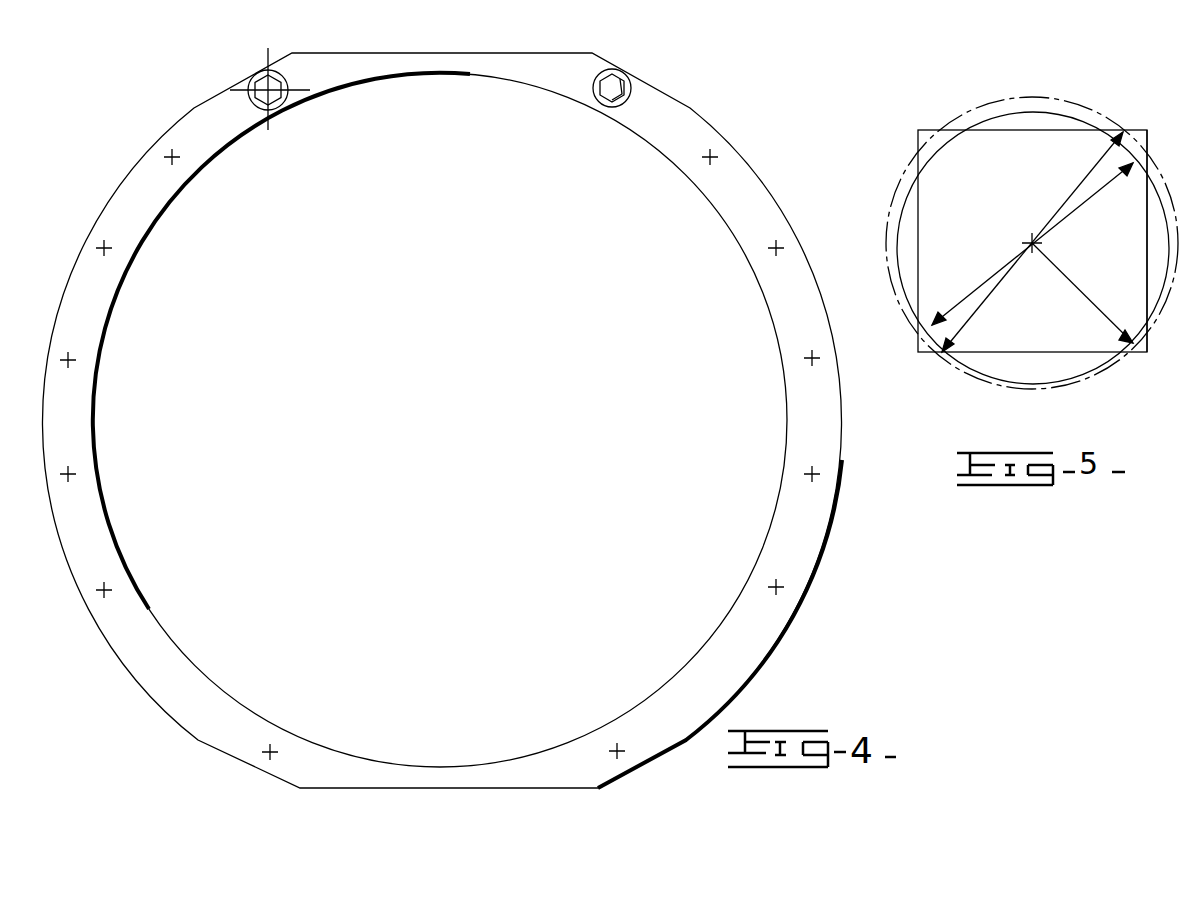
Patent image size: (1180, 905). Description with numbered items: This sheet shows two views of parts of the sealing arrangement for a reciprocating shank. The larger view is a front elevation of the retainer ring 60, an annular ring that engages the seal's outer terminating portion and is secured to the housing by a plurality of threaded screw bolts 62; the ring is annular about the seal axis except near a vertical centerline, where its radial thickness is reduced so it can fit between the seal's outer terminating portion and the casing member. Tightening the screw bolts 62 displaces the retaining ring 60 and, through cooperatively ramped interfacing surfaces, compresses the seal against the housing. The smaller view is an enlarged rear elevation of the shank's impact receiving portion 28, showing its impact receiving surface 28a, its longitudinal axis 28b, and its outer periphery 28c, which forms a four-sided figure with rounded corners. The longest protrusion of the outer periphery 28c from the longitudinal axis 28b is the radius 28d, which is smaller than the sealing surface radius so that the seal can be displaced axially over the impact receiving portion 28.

In FIG. 4, the retainer ring 60 is at (148, 632).
In FIG. 4, the threaded screw bolts 62 is at (274, 100).
In FIG. 5, the impact receiving portion 28 is at (1048, 165).
In FIG. 5, the impact receiving surface 28a is at (985, 258).
In FIG. 5, the longitudinal axis 28b is at (1030, 238).
In FIG. 5, the outer periphery 28c is at (1147, 235).
In FIG. 5, the radius 28d is at (1088, 297).